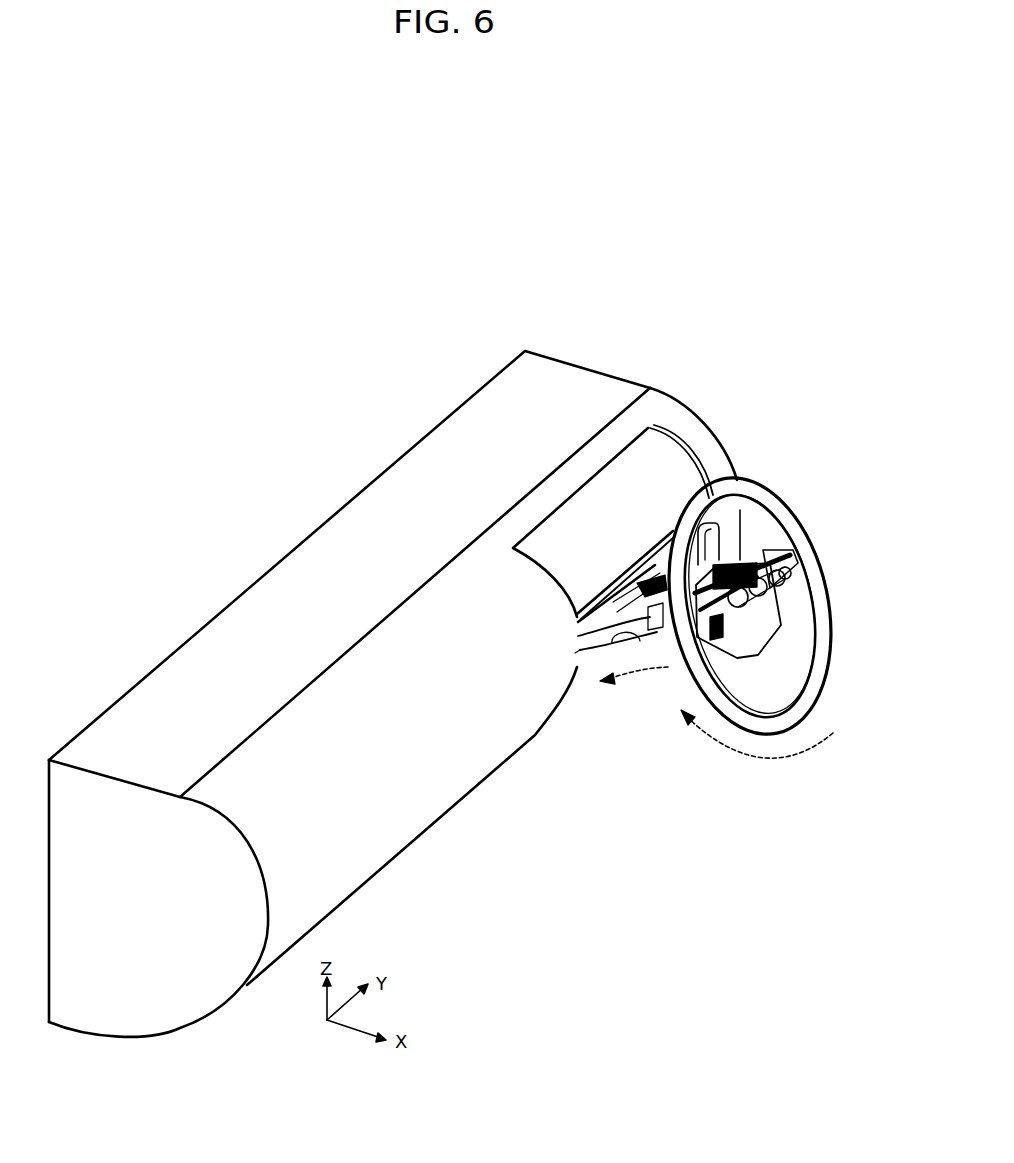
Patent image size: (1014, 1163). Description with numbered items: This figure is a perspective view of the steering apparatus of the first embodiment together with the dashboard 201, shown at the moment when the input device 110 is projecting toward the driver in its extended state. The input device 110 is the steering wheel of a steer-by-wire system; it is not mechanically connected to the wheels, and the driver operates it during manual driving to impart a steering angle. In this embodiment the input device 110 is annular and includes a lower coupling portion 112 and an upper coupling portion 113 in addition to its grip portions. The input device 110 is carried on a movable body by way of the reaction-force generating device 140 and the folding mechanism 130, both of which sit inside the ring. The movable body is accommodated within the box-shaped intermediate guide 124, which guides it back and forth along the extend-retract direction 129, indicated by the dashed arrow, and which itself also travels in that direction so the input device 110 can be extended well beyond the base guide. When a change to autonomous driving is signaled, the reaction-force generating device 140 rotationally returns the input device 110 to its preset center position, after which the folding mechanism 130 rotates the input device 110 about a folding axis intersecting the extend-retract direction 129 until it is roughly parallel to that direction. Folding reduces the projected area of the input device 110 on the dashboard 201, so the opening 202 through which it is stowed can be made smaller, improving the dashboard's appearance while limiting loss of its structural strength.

The dashboard 201 is at (572, 387).
The opening 202 is at (587, 673).
The input device 110 is at (768, 586).
The lower coupling portion 112 is at (762, 733).
The upper coupling portion 113 is at (713, 490).
The intermediate guide 124 is at (580, 633).
The extend-retract direction 129 is at (638, 673).
The folding mechanism 130 is at (780, 600).
The reaction-force generating device 140 is at (792, 568).